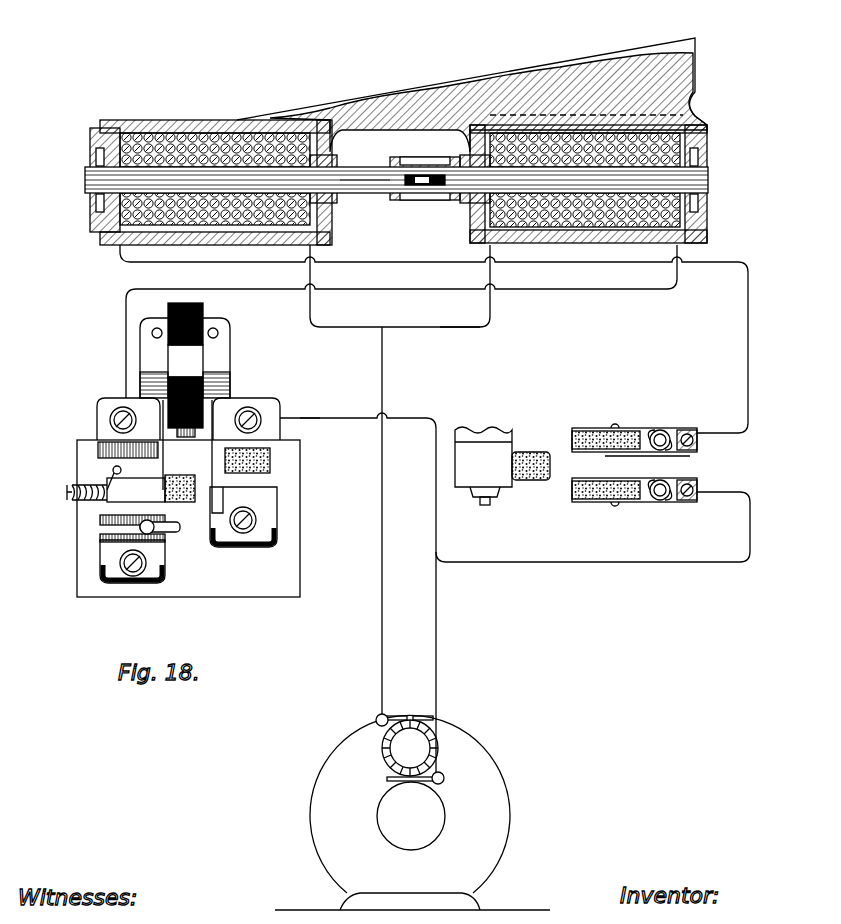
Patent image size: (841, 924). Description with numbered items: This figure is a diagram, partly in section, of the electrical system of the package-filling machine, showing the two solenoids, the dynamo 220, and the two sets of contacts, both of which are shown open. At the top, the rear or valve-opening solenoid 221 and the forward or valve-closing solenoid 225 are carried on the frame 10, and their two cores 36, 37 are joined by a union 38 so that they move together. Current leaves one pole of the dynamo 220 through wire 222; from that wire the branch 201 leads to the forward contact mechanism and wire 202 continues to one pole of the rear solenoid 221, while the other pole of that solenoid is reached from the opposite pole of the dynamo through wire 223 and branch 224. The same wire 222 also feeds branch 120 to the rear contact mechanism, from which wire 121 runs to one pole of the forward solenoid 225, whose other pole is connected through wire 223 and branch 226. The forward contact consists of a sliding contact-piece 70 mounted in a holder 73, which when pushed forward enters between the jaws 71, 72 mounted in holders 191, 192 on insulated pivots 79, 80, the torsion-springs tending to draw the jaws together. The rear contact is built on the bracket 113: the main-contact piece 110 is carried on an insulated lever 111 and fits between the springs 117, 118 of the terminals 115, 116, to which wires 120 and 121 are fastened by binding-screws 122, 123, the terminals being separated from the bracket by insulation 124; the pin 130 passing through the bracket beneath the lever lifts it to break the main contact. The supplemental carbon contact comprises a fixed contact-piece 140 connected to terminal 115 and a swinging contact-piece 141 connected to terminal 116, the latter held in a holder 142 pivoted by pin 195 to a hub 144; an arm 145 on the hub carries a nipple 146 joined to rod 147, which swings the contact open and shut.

The frame 10 is at (461, 70).
The core 36 is at (708, 182).
The core 37 is at (370, 186).
The union 38 is at (422, 158).
The rear or valve-opening solenoid 221 is at (185, 142).
The forward or valve-closing solenoid 225 is at (535, 135).
The branch 224 is at (318, 310).
The branch 226 is at (473, 328).
The wire 202 is at (748, 372).
The branch 201 is at (608, 563).
The wire 222 is at (442, 653).
The wire 223 is at (380, 675).
The dynamo 220 is at (485, 782).
The wire 121 is at (124, 368).
The spring 117 is at (272, 431).
The branch 120 is at (311, 415).
The bracket 113 is at (232, 332).
The terminal 116 is at (157, 407).
The binding-screw 123 is at (110, 418).
The spring 118 is at (162, 432).
The binding-screw 122 is at (258, 406).
The insulated lever 111 is at (203, 308).
The main-contact piece 110 is at (200, 360).
The terminal 115 is at (218, 410).
The pin 130 is at (185, 431).
The hub 144 is at (133, 472).
The holder 142 is at (136, 491).
The swinging contact-piece 141 is at (184, 496).
The fixed contact-piece 140 is at (272, 463).
The pin 195 is at (66, 492).
The holder 192 is at (103, 480).
The arm 145 is at (107, 527).
The nipple 146 is at (100, 539).
The rod 147 is at (167, 524).
The insulation 124 is at (100, 568).
The holder 73 is at (483, 466).
The sliding contact-piece 70 is at (541, 471).
The holder 191 is at (618, 426).
The jaw 71 is at (592, 438).
The insulated pivot 79 is at (661, 432).
The jaw 72 is at (595, 500).
The insulated pivot 80 is at (665, 497).